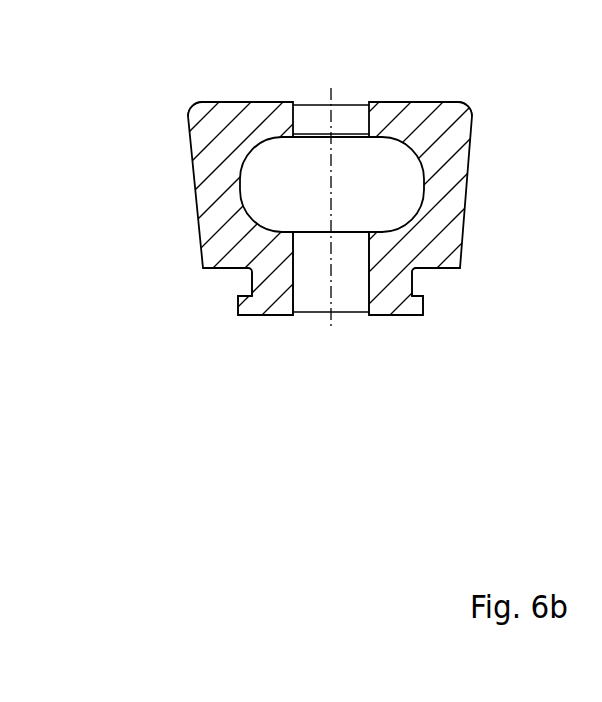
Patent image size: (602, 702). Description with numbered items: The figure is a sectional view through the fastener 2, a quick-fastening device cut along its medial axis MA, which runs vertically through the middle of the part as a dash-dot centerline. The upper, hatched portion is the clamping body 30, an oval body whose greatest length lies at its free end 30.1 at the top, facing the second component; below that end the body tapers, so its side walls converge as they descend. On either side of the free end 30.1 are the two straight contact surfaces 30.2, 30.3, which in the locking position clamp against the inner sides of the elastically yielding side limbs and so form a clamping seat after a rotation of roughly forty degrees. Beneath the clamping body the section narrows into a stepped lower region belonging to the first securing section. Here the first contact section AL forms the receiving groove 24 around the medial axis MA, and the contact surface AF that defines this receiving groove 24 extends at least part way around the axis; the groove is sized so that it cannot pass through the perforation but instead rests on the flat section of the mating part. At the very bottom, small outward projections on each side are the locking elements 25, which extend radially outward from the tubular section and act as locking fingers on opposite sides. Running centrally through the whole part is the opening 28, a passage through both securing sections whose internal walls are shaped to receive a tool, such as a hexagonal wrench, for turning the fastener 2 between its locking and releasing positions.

The fastener 2 is at (212, 227).
The receiving groove 24 is at (444, 287).
The locking element 25 is at (240, 315).
The opening 28 is at (309, 323).
The clamping body 30 is at (180, 155).
The free end 30.1 is at (208, 87).
The straight contact surface 30.2 is at (165, 101).
The straight contact surface 30.3 is at (499, 102).
The medial axis MA is at (338, 191).
The first contact section AL is at (182, 262).
The contact surface AF is at (206, 283).